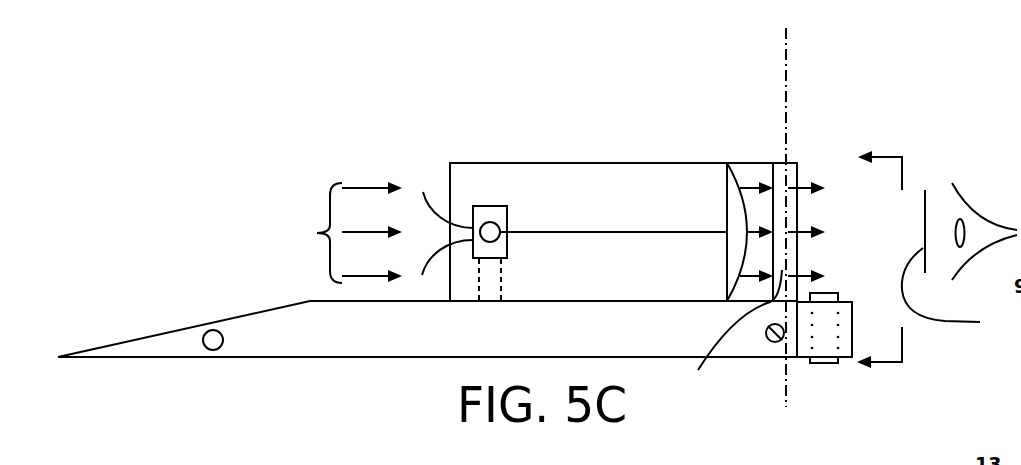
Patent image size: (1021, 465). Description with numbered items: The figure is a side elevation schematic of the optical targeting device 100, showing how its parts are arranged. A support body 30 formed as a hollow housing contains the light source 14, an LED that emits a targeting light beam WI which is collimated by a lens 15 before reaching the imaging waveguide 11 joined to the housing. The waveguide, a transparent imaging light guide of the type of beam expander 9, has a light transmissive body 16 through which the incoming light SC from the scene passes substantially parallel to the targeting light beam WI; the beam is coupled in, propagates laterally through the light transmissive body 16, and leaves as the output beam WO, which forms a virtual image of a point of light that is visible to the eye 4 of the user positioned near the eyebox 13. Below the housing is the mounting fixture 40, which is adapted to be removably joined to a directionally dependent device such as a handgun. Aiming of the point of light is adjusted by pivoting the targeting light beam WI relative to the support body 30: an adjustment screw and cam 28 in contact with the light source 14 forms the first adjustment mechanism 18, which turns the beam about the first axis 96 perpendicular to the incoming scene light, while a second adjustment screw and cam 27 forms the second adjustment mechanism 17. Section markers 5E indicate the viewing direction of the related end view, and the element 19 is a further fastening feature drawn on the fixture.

The optical targeting device 100 is at (600, 134).
The support body 30 is at (555, 163).
The adjustment screw and cam 28 is at (484, 224).
The light source 14 is at (495, 213).
The adjustment screw and cam 27 is at (502, 275).
The lens 15 is at (736, 200).
The targeting light beam WI is at (766, 232).
The first axis 96 is at (787, 58).
The imaging light guide beam expander 9 is at (798, 164).
The output beam WO is at (810, 232).
The incoming light from the scene SC is at (818, 143).
The imaging waveguide 11 is at (806, 252).
The section line 5E is at (884, 259).
The eyebox 13 is at (957, 262).
The eye 4 is at (977, 220).
The light transmissive body 16 is at (733, 333).
The second adjustment mechanism 17 is at (771, 342).
The first adjustment mechanism 18 is at (827, 363).
The fastener 19 is at (208, 332).
The mounting fixture 40 is at (403, 357).